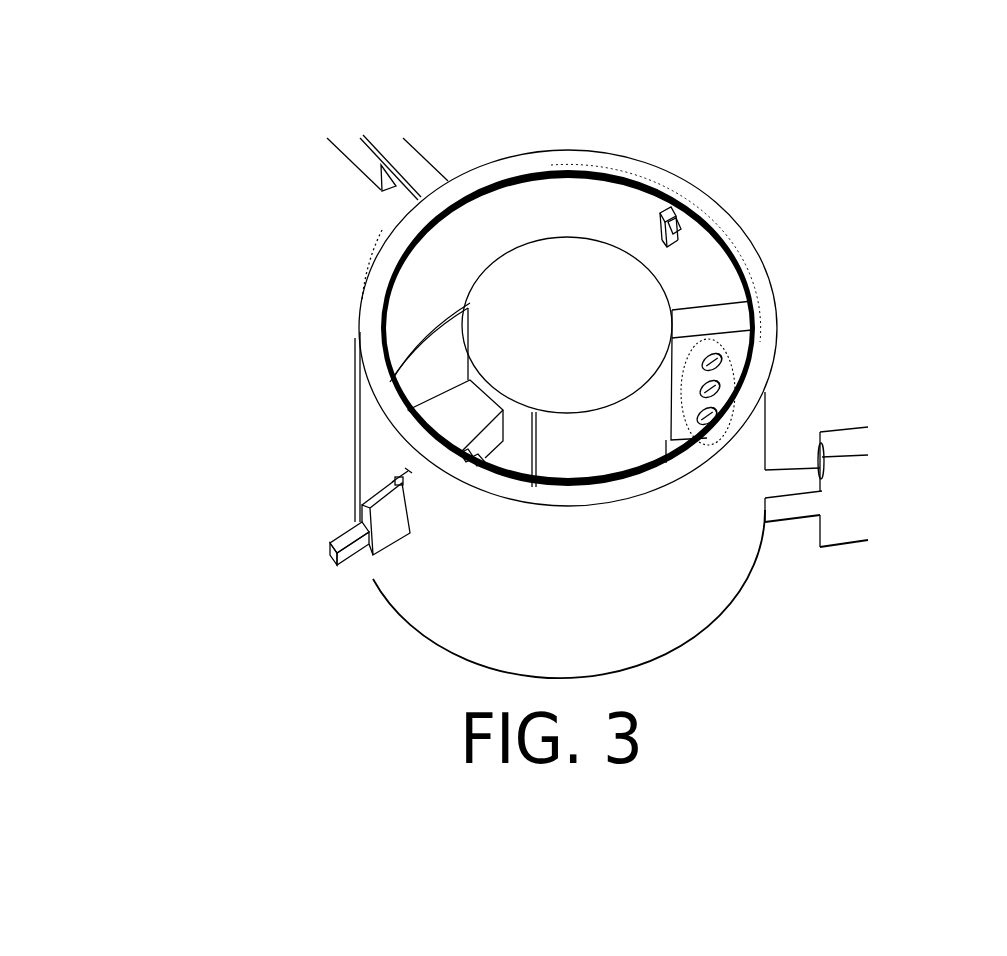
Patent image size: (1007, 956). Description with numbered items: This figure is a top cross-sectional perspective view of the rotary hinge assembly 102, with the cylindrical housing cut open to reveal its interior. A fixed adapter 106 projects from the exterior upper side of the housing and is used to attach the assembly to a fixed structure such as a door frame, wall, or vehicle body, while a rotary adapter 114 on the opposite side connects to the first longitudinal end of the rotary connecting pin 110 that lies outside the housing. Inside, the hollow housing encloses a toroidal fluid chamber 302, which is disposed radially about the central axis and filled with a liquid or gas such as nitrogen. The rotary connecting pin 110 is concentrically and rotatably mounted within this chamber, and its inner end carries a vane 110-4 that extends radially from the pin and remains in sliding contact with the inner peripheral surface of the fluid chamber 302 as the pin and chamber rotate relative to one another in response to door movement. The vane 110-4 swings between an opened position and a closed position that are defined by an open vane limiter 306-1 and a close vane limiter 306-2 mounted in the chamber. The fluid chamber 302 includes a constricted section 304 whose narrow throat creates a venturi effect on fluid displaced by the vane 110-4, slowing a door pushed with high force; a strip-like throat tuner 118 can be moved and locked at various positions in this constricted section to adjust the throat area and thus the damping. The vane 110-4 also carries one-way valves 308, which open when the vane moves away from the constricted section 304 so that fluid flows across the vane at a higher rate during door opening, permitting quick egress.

The rotary hinge assembly 102 is at (174, 122).
The fixed adapter 106 is at (375, 145).
The rotary connecting pin 110 is at (572, 326).
The vane 110-4 is at (716, 303).
The rotary adapter 114 is at (843, 430).
The throat tuner 118 is at (378, 556).
The fluid chamber 302 is at (412, 280).
The constricted section 304 is at (447, 395).
The open vane limiter 306-1 is at (660, 226).
The close vane limiter 306-2 is at (480, 463).
The one-way valves 308 is at (734, 364).